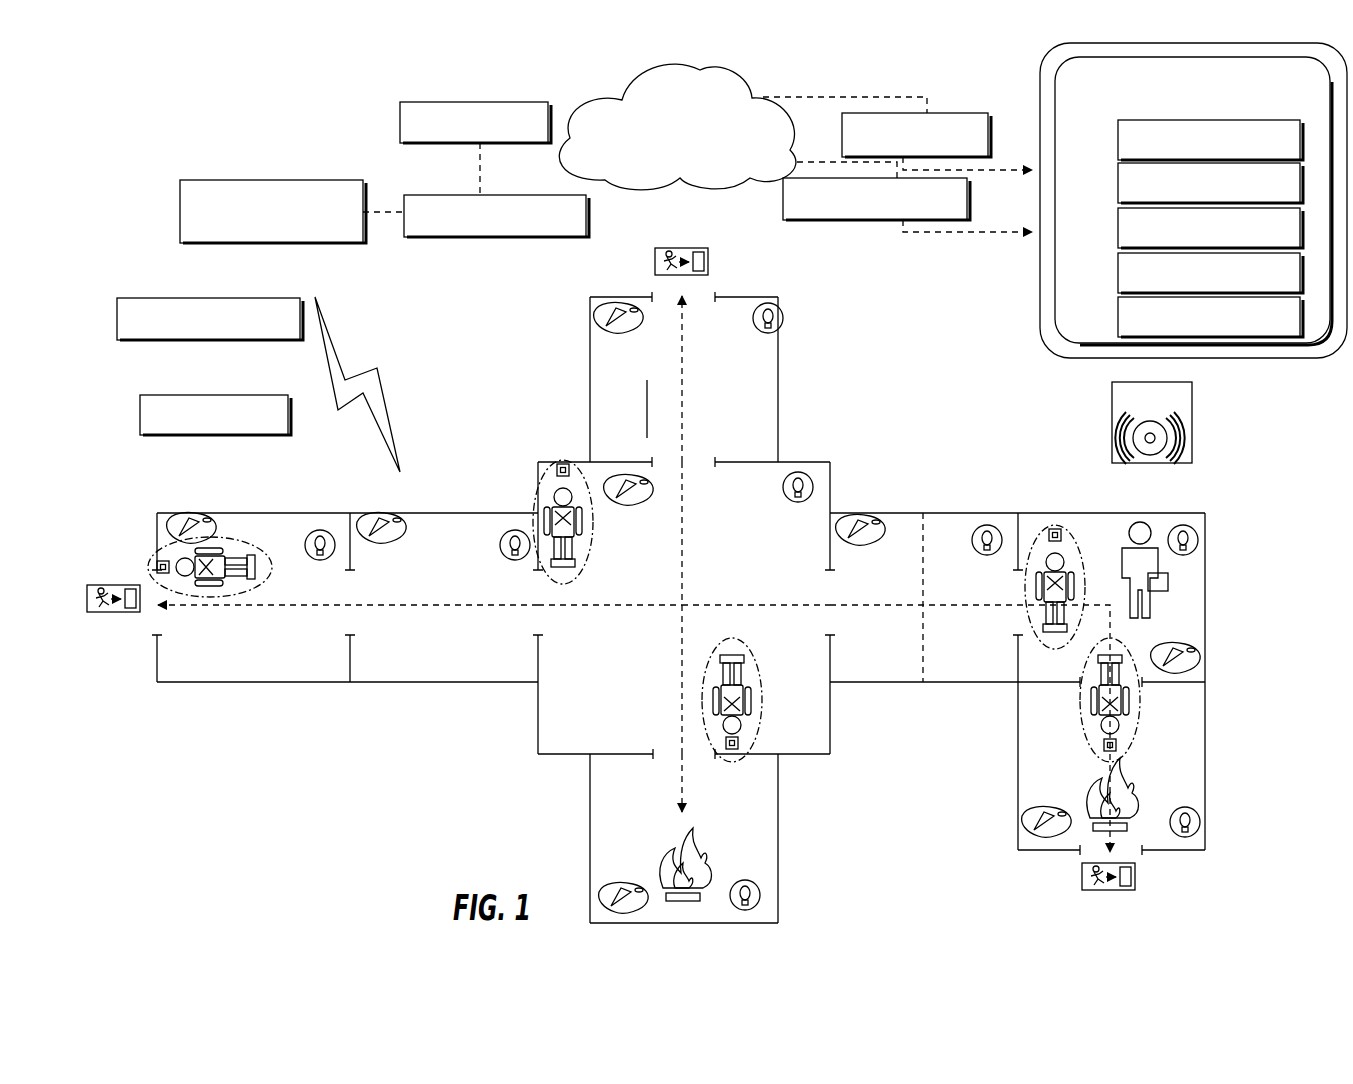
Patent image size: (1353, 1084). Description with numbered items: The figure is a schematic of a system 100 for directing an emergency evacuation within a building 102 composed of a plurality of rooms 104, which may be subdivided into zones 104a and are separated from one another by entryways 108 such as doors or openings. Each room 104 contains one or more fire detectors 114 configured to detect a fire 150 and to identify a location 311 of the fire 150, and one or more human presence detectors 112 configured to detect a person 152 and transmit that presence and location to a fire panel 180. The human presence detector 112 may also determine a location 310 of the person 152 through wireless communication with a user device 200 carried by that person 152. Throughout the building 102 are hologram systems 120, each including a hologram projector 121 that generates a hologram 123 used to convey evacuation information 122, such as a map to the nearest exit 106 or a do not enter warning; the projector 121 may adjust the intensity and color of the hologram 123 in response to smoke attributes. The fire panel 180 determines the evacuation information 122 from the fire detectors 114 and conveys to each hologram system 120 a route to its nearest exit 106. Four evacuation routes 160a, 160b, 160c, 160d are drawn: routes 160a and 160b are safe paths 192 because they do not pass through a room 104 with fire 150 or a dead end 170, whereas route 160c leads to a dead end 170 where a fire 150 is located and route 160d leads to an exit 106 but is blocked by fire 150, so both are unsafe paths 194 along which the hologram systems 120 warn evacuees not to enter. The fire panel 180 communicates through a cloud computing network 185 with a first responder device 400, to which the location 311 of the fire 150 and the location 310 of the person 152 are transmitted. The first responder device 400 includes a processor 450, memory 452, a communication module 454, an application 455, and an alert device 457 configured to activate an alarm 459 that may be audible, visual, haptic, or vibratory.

The system 100 is at (130, 168).
The building 102 is at (222, 684).
The rooms 104 is at (772, 345).
The zones 104a is at (935, 590).
The exit 106 is at (652, 246).
The entryways 108 is at (715, 305).
The human presence detectors 112 is at (615, 310).
The fire detectors 114 is at (772, 306).
The hologram systems 120 is at (268, 578).
The hologram projector 121 is at (157, 566).
The evacuation information 122 is at (235, 545).
The hologram 123 is at (230, 598).
The fire 150 is at (665, 878).
The person 152 is at (1130, 528).
The evacuation route 160a is at (668, 598).
The evacuation route 160b is at (684, 540).
The evacuation route 160c is at (680, 620).
The evacuation route 160d is at (757, 604).
The dead end 170 is at (668, 924).
The fire panel 180 is at (363, 190).
The cloud computing network 185 is at (757, 98).
The safe path 192 is at (688, 370).
The unsafe path 194 is at (688, 775).
The user device 200 is at (1170, 600).
The location of a person 310 is at (489, 147).
The location of the fire 311 is at (494, 240).
The first responder device 400 is at (1040, 102).
The processor 450 is at (1118, 185).
The memory 452 is at (1118, 140).
The communication module 454 is at (1118, 230).
The application 455 is at (1118, 275).
The alert device 457 is at (1118, 318).
The alarm 459 is at (1112, 430).